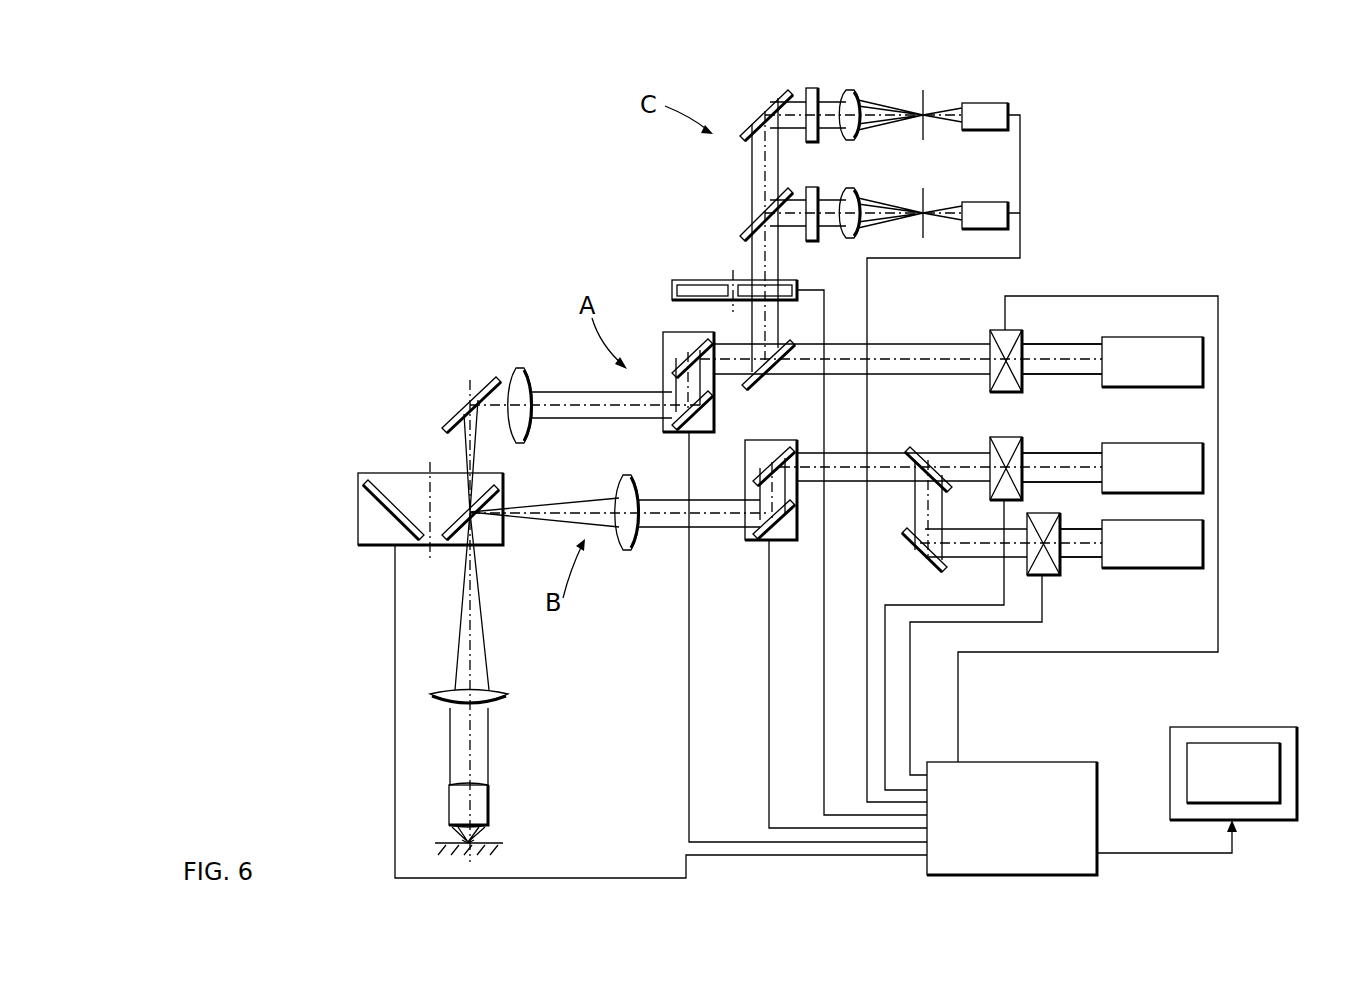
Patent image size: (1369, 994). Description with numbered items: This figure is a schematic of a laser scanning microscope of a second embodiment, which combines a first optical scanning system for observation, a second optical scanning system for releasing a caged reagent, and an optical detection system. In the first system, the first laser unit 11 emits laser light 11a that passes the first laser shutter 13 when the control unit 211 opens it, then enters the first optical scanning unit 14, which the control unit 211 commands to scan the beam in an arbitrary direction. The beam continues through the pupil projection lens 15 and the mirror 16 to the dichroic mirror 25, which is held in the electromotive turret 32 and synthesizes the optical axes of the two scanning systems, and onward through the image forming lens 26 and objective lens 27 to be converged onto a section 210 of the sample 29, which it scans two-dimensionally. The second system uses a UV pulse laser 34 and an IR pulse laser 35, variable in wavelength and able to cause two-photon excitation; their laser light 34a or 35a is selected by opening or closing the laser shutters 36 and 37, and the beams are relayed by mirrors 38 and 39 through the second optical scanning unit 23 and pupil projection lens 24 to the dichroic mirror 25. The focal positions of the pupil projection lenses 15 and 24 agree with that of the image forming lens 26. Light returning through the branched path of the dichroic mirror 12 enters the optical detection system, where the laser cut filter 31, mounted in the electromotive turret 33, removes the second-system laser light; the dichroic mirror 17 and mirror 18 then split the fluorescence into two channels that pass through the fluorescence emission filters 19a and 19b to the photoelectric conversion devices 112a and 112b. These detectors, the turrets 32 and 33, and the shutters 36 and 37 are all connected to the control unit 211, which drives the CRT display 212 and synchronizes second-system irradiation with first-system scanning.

The first laser unit 11 is at (1207, 358).
The laser light 11a is at (1062, 345).
The photoelectric conversion device 112a is at (1008, 203).
The photoelectric conversion device 112b is at (1000, 103).
The dichroic mirror 12 is at (765, 372).
The first laser shutter 13 is at (990, 328).
The first optical scanning unit 14 is at (702, 433).
The pupil projection lens 15 is at (518, 368).
The mirror 16 is at (448, 411).
The dichroic mirror 17 is at (747, 224).
The mirror 18 is at (758, 112).
The fluorescence emission filter 19a is at (818, 188).
The fluorescence emission filter 19b is at (808, 88).
The second optical scanning unit 23 is at (755, 541).
The pupil projection lens 24 is at (630, 552).
The dichroic mirror 25 is at (503, 489).
The image forming lens 26 is at (508, 700).
The objective lens 27 is at (490, 794).
The sample 29 is at (452, 842).
The section 210 is at (497, 843).
The control unit 211 is at (1065, 762).
The CRT display 212 is at (1298, 761).
The laser cut filter 31 is at (743, 282).
The electromotive turret 32 is at (357, 507).
The electromotive turret 33 is at (673, 289).
The UV pulse laser 34 is at (1207, 466).
The laser light 34a is at (1080, 453).
The IR pulse laser 35 is at (1207, 546).
The laser light 35a is at (1080, 561).
The laser shutter 36 is at (1005, 437).
The laser shutter 37 is at (1050, 578).
The dichroic mirror 38 is at (925, 457).
The mirror 39 is at (913, 530).